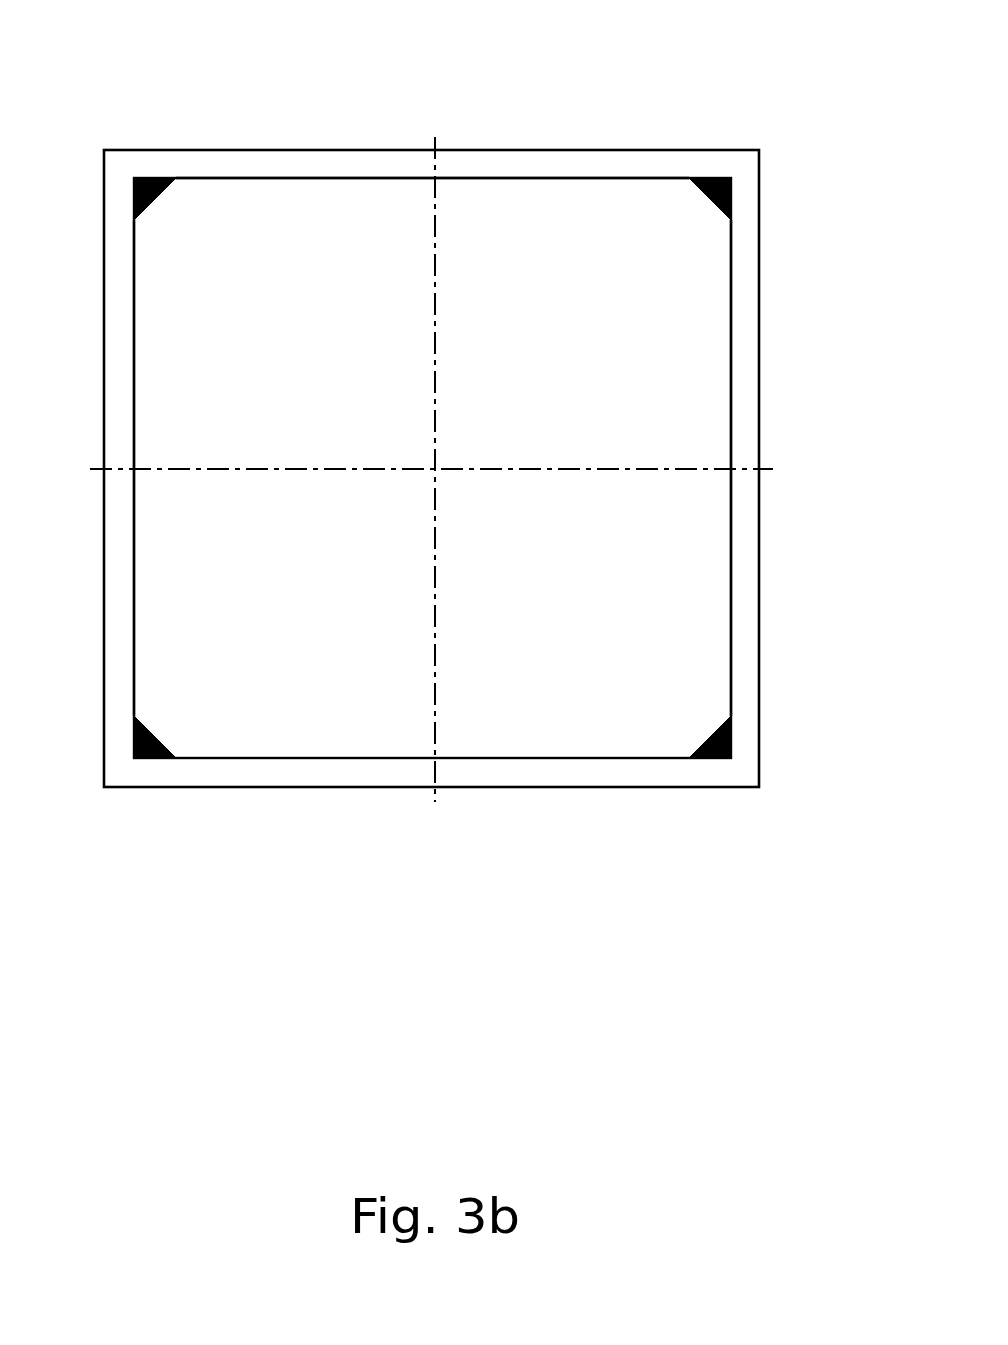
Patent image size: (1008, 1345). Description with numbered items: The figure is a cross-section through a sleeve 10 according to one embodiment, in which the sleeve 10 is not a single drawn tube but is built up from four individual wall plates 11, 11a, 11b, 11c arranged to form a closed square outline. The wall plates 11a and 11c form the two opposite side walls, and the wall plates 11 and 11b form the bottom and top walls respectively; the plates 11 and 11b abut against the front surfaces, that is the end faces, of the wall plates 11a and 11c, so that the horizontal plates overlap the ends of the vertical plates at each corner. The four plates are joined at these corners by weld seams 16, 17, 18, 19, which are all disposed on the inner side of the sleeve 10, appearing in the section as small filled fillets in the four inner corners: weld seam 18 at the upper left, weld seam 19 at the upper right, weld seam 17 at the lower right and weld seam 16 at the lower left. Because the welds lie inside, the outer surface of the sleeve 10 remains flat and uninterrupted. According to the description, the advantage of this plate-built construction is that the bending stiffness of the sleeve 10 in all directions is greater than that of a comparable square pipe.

The sleeve 10 is at (782, 138).
The wall plate 11 is at (590, 770).
The wall plate 11a is at (120, 605).
The wall plate 11b is at (347, 163).
The wall plate 11c is at (752, 522).
The weld seam 16 is at (150, 728).
The weld seam 17 is at (700, 742).
The weld seam 18 is at (157, 196).
The weld seam 19 is at (710, 200).